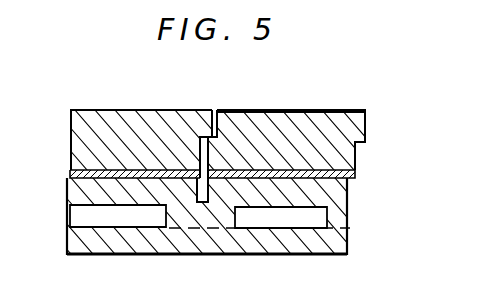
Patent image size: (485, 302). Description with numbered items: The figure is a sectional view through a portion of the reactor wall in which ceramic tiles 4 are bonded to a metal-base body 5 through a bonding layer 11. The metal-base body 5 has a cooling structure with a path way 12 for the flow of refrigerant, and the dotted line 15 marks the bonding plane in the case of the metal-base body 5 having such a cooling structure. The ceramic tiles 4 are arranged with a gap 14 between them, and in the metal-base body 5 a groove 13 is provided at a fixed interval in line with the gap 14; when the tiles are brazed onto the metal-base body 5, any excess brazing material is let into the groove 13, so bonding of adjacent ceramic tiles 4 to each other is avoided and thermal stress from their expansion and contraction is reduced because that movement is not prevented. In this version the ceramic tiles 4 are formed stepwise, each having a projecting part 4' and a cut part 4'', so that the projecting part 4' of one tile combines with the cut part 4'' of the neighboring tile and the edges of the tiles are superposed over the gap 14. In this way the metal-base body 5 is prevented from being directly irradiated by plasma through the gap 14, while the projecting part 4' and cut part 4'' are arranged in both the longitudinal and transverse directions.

The ceramic tile 4 is at (214, 126).
The projecting part 4' is at (385, 140).
The cut part 4'' is at (291, 100).
The bonding layer 11 is at (356, 175).
The gap 14 is at (213, 110).
The groove 13 is at (203, 199).
The path way 12 is at (279, 218).
The dotted line 15 is at (352, 228).
The metal-base body 5 is at (338, 243).